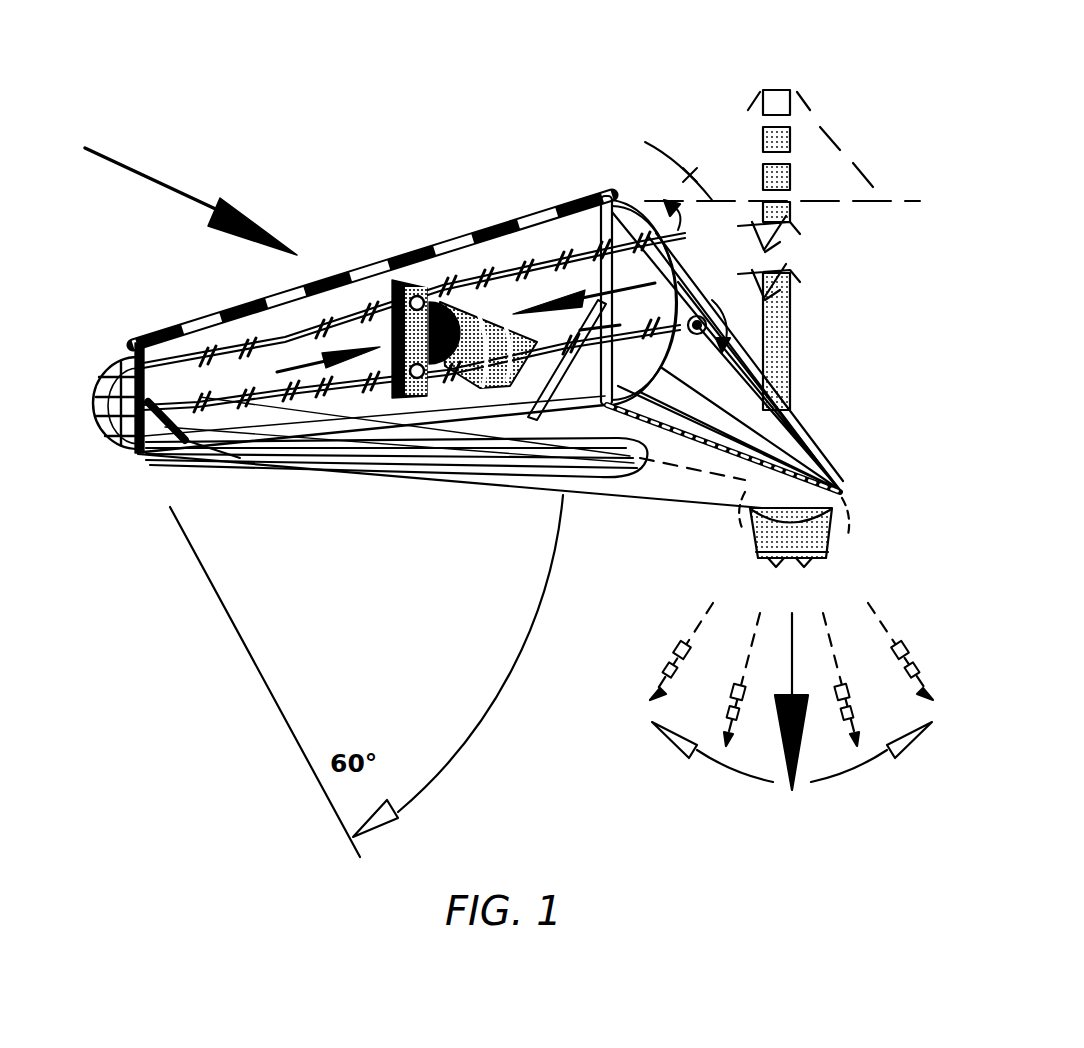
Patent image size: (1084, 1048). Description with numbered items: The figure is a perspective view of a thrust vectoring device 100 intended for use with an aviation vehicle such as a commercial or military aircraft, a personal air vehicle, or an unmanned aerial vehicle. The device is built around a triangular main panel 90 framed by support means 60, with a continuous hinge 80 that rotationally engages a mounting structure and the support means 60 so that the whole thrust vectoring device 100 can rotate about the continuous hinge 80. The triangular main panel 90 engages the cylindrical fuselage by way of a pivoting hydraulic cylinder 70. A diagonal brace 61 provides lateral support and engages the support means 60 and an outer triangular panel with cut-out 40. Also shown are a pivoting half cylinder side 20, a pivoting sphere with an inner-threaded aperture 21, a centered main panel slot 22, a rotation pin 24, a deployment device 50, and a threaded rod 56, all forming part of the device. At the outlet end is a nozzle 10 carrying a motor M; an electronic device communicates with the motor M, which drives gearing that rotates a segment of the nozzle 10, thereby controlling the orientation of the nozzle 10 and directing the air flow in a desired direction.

The thrust vectoring device 100 is at (440, 124).
The nozzle 10 is at (748, 540).
The pivoting half cylinder side 20 is at (106, 432).
The pivoting sphere with an inner-threaded aperture 21 is at (787, 410).
The centered main panel slot 22 is at (547, 415).
The rotation pin 24 is at (840, 483).
The outer triangular panel with cut-out 40 is at (420, 483).
The deployment device 50 is at (396, 398).
The threaded rod 56 is at (370, 288).
The support means 60 is at (568, 200).
The diagonal brace 61 is at (158, 442).
The pivoting hydraulic cylinder 70 is at (760, 173).
The continuous hinge 80 is at (198, 320).
The triangular main panel 90 is at (452, 272).
The motor M is at (465, 376).